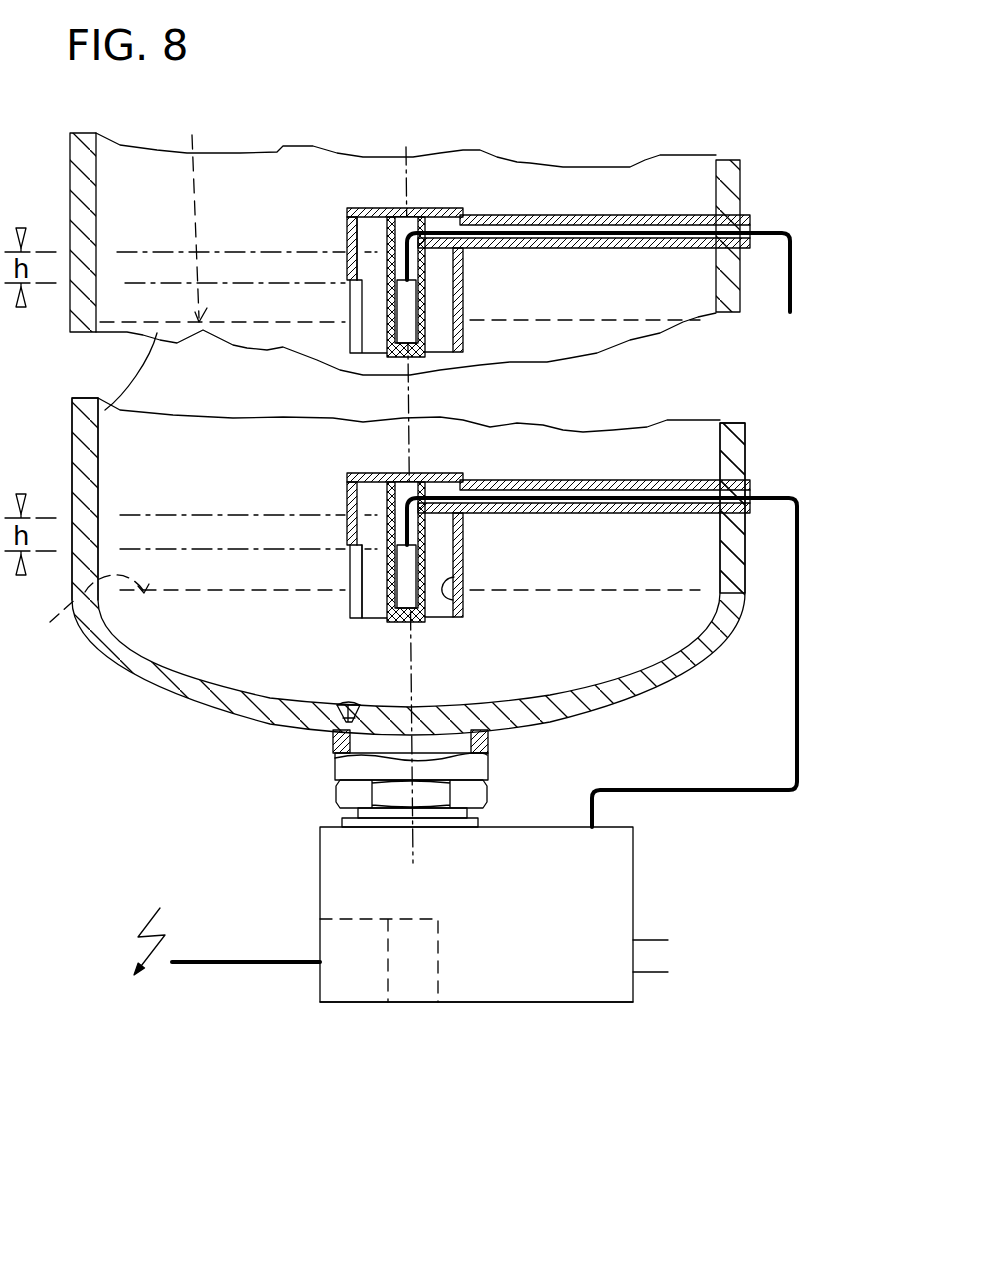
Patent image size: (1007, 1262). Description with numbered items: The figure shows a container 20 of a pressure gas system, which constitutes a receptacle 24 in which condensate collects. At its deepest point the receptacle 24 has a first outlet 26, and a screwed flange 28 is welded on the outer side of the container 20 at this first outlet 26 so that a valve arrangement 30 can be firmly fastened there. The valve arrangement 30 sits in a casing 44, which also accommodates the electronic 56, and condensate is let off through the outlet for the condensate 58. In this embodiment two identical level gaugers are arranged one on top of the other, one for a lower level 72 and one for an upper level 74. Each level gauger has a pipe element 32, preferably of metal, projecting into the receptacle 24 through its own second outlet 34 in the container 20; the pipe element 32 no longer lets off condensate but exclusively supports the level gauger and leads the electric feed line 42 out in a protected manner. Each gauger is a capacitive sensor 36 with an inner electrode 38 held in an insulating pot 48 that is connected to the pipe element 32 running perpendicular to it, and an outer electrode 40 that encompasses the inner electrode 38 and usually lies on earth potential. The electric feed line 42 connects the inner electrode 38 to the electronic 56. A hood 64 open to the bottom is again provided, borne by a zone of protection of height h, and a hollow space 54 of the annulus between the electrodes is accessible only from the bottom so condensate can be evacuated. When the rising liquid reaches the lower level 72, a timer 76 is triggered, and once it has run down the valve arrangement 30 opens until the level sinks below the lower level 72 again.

The container 20 is at (78, 398).
The receptacle 24 is at (118, 437).
The first outlet 26 is at (337, 705).
The screwed flange 28 is at (487, 755).
The valve arrangement 30 is at (520, 985).
The pipe element 32 is at (518, 213).
The second outlet 34 is at (712, 208).
The sensor 36 is at (375, 598).
The inner electrode 38 is at (413, 300).
The outer electrode 40 is at (453, 600).
The electric feed line 42 is at (758, 222).
The casing 44 is at (603, 1000).
The pot 48 is at (395, 625).
The hollow space 54 is at (365, 230).
The electronic 56 is at (338, 990).
The outlet for the condensate 58 is at (663, 963).
The hood 64 is at (370, 215).
The lower level 72 is at (80, 612).
The upper level 74 is at (197, 209).
The timer 76 is at (407, 982).